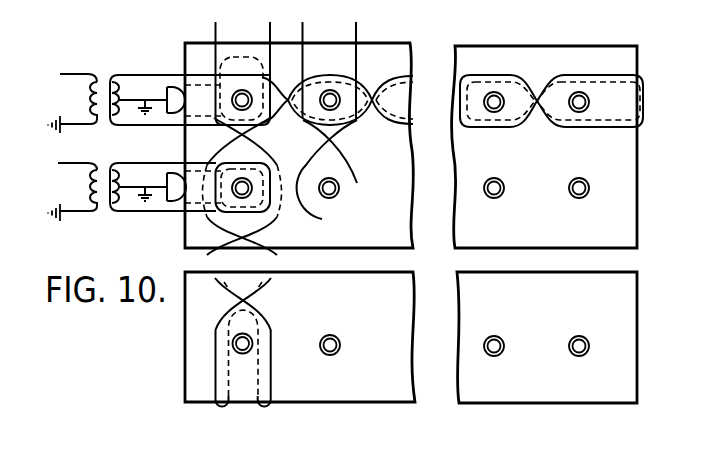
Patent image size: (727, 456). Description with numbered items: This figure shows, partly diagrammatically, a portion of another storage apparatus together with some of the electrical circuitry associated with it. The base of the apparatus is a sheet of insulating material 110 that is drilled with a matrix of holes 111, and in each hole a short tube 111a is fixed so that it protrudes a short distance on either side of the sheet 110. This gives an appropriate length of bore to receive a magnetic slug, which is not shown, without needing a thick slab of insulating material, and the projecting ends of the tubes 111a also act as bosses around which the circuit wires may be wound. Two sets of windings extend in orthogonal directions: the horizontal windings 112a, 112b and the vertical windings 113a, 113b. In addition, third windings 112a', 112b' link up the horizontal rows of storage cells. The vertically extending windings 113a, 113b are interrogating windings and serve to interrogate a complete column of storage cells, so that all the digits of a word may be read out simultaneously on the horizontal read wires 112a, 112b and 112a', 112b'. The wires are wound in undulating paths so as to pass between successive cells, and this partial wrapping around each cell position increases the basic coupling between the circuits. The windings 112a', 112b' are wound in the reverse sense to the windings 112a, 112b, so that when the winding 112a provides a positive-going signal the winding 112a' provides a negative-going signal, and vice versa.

The sheet of insulating material 110 is at (452, 58).
The hole 111 is at (498, 92).
The short tube 111a is at (578, 92).
The winding 112a is at (159, 89).
The third winding 112a' is at (145, 117).
The winding 112b is at (159, 176).
The third winding 112b' is at (141, 207).
The interrogating winding 113a is at (268, 36).
The interrogating winding 113b is at (355, 56).